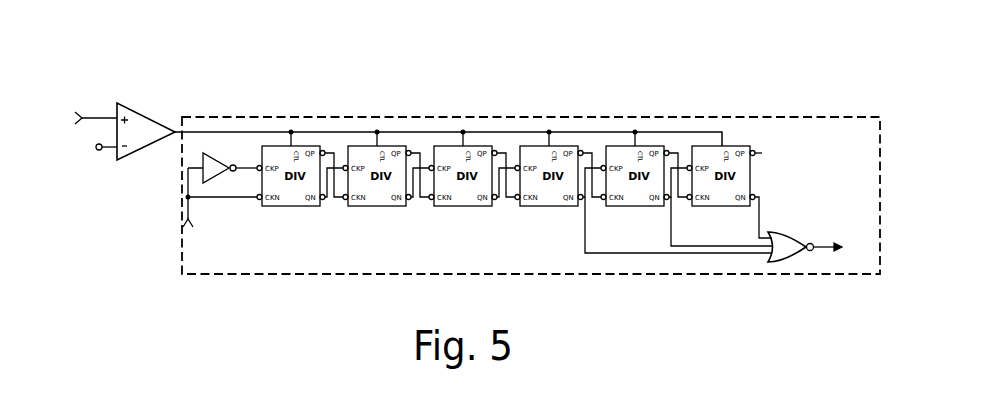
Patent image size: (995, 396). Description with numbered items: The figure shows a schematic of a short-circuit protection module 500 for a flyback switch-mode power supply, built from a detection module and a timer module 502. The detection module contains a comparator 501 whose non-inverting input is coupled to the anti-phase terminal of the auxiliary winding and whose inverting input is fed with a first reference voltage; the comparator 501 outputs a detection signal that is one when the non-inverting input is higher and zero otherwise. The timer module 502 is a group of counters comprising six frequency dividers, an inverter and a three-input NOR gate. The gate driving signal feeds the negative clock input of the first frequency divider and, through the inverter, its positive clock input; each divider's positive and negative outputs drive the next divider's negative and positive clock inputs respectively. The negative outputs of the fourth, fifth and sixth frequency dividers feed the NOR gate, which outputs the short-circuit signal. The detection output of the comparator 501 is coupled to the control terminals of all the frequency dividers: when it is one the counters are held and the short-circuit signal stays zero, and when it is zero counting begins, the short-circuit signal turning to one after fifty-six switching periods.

The zero-crossing detection circuit 500 is at (362, 48).
The comparator 501 is at (135, 107).
The timer module 502 is at (607, 117).